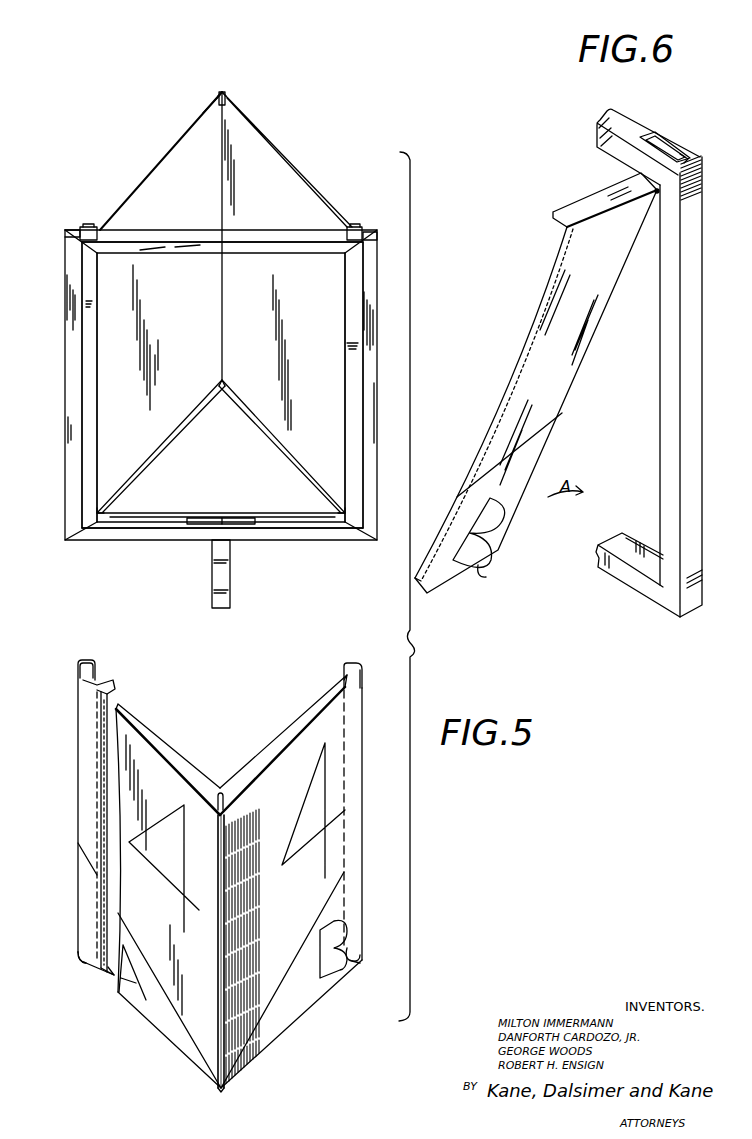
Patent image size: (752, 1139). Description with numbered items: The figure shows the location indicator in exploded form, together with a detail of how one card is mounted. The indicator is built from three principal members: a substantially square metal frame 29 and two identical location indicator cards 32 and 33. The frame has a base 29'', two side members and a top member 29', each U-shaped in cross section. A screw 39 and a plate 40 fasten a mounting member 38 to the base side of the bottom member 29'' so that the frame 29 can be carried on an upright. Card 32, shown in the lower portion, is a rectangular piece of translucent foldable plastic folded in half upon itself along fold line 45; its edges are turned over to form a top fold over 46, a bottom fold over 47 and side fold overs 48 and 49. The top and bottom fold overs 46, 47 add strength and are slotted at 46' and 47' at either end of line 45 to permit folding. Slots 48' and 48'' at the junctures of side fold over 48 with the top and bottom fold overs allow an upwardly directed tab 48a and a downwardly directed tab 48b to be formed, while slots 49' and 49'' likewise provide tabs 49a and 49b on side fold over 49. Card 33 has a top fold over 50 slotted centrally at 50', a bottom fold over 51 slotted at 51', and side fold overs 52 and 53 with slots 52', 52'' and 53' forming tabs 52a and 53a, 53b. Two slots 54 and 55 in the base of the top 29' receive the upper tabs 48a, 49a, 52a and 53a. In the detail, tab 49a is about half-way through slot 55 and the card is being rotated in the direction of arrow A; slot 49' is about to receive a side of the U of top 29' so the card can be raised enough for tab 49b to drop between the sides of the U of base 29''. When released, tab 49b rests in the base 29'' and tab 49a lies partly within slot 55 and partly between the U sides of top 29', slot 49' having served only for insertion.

In FIG. 5, the frame 29 is at (196, 385).
In FIG. 6, the frame 29 is at (700, 386).
In FIG. 5, the top member 29' is at (222, 226).
In FIG. 6, the top member 29' is at (648, 139).
In FIG. 5, the base 29'' is at (222, 545).
In FIG. 6, the base 29'' is at (638, 585).
In FIG. 5, the location indicator card 32 is at (352, 751).
In FIG. 6, the location indicator card 32 is at (572, 370).
In FIG. 5, the location indicator card 33 is at (268, 139).
In FIG. 5, the mounting member 38 is at (223, 577).
In FIG. 5, the screw 39 is at (217, 523).
In FIG. 5, the plate 40 is at (253, 522).
In FIG. 5, the fold line 45 is at (220, 1053).
In FIG. 5, the top fold over 46 is at (168, 892).
In FIG. 5, the slot 46' is at (235, 776).
In FIG. 5, the bottom fold over 47 is at (291, 881).
In FIG. 5, the slot 47' is at (206, 1107).
In FIG. 5, the side fold over 48 is at (72, 817).
In FIG. 5, the upwardly directed tab 48a is at (97, 664).
In FIG. 5, the downwardly directed tab 48b is at (78, 955).
In FIG. 5, the slot 48' is at (68, 692).
In FIG. 5, the slot 48'' is at (74, 988).
In FIG. 5, the side fold over 49 is at (381, 824).
In FIG. 5, the tab 49a is at (358, 663).
In FIG. 6, the tab 49a is at (660, 146).
In FIG. 5, the tab 49b is at (362, 958).
In FIG. 6, the tab 49b is at (486, 575).
In FIG. 5, the slot 49' is at (318, 678).
In FIG. 6, the slot 49' is at (634, 210).
In FIG. 5, the slot 49'' is at (367, 982).
In FIG. 5, the top fold over 50 is at (167, 161).
In FIG. 5, the slot 50' is at (253, 99).
In FIG. 5, the bottom fold over 51 is at (221, 446).
In FIG. 5, the slot 51' is at (218, 410).
In FIG. 5, the side fold over 52 is at (115, 409).
In FIG. 5, the tab 52a is at (90, 227).
In FIG. 5, the slot 52' is at (58, 214).
In FIG. 5, the slot 52'' is at (130, 500).
In FIG. 5, the side fold over 53 is at (323, 385).
In FIG. 5, the tab 53a is at (353, 227).
In FIG. 5, the slot 53' is at (374, 215).
In FIG. 5, the tab 53b is at (360, 541).
In FIG. 5, the slot 54 is at (65, 234).
In FIG. 5, the slot 55 is at (378, 238).
In FIG. 6, the slot 55 is at (697, 153).